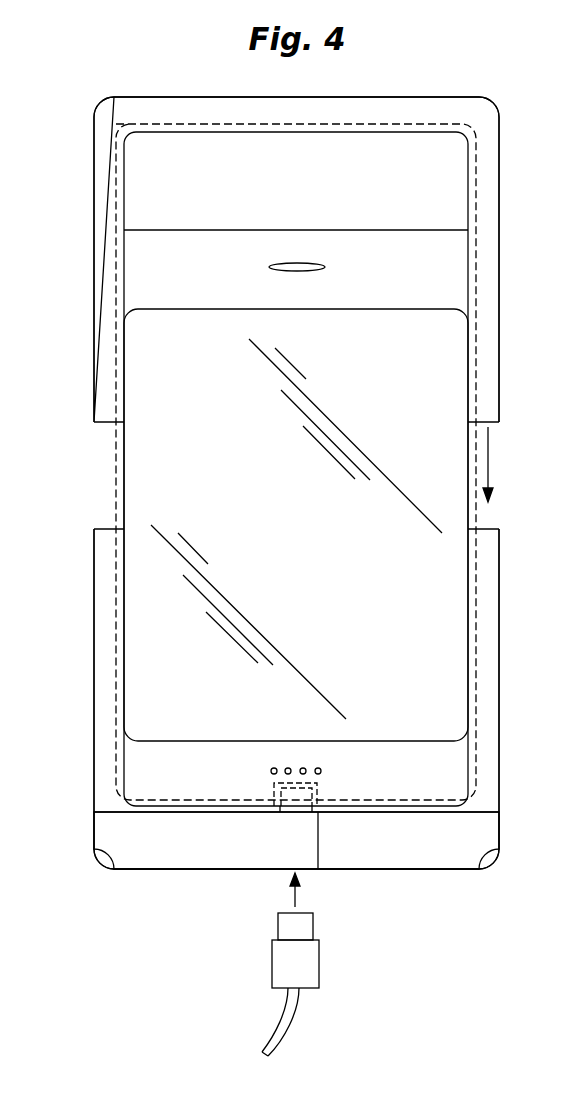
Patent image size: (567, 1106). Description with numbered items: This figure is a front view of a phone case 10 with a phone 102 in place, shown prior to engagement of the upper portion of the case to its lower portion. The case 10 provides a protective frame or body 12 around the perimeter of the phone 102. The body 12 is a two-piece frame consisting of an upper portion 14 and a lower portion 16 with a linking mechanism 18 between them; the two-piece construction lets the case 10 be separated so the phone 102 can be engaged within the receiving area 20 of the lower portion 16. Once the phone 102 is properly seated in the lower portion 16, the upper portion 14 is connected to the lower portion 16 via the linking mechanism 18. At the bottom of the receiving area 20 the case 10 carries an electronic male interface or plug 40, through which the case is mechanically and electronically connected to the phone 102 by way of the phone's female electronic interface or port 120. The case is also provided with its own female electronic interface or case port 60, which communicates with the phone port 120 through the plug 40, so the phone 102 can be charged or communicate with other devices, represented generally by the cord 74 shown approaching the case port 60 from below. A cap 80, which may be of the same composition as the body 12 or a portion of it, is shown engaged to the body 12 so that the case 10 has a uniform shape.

The phone case 10 is at (139, 85).
The body 12 is at (97, 110).
The upper portion 14 is at (94, 290).
The lower portion 16 is at (94, 618).
The linking mechanism 18 is at (105, 527).
The receiving area 20 is at (381, 147).
The phone 102 is at (448, 241).
The plug 40 is at (278, 795).
The port 120 is at (317, 797).
The case port 60 is at (307, 870).
The cap 80 is at (483, 833).
The cord 74 is at (272, 953).